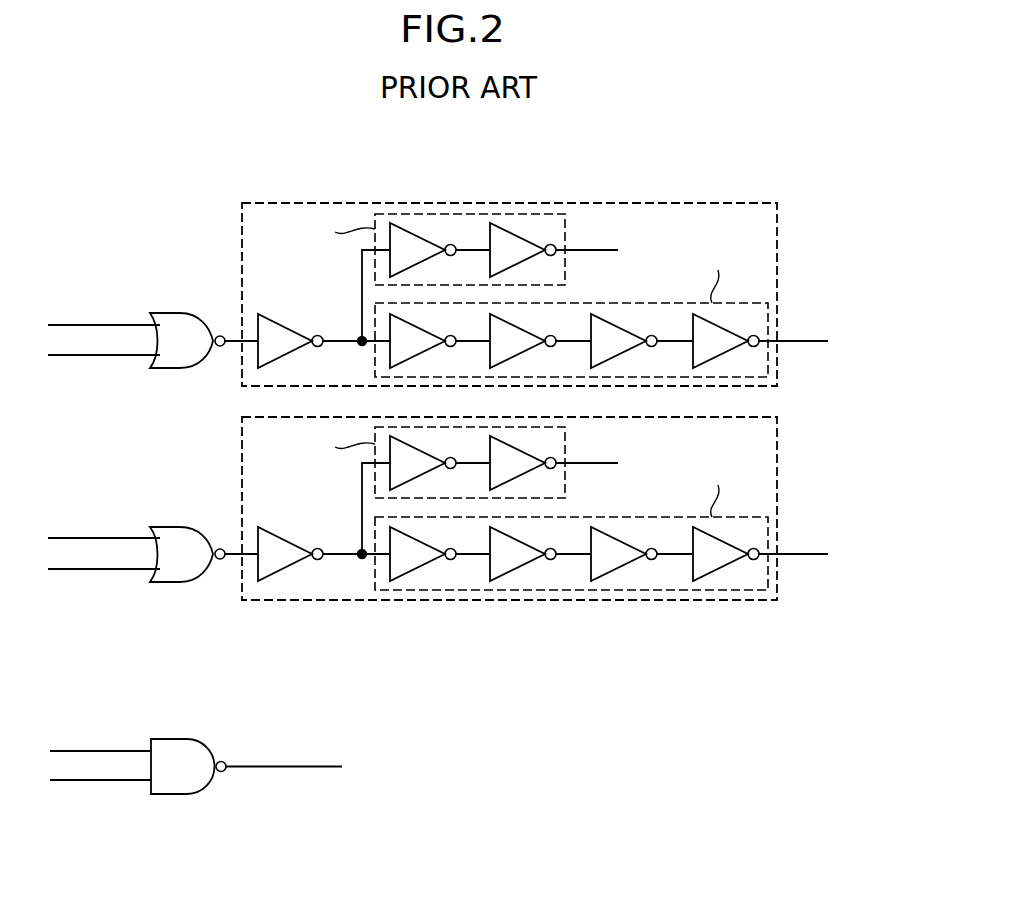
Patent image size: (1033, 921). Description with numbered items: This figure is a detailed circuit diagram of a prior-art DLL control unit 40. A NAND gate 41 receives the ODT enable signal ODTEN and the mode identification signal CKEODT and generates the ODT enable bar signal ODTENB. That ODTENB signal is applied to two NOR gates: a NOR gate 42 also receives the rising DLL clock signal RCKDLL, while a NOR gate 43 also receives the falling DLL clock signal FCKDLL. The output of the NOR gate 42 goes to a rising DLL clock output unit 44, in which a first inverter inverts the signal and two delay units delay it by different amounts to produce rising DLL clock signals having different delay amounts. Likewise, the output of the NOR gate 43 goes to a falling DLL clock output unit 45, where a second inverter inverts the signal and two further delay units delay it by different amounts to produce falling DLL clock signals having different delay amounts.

The DLL control unit 40 is at (791, 155).
The NAND gate 41 is at (177, 738).
The NOR gate 42 is at (173, 312).
The NOR gate 43 is at (173, 525).
The rising DLL clock output unit 44 is at (777, 237).
The falling DLL clock output unit 45 is at (777, 450).